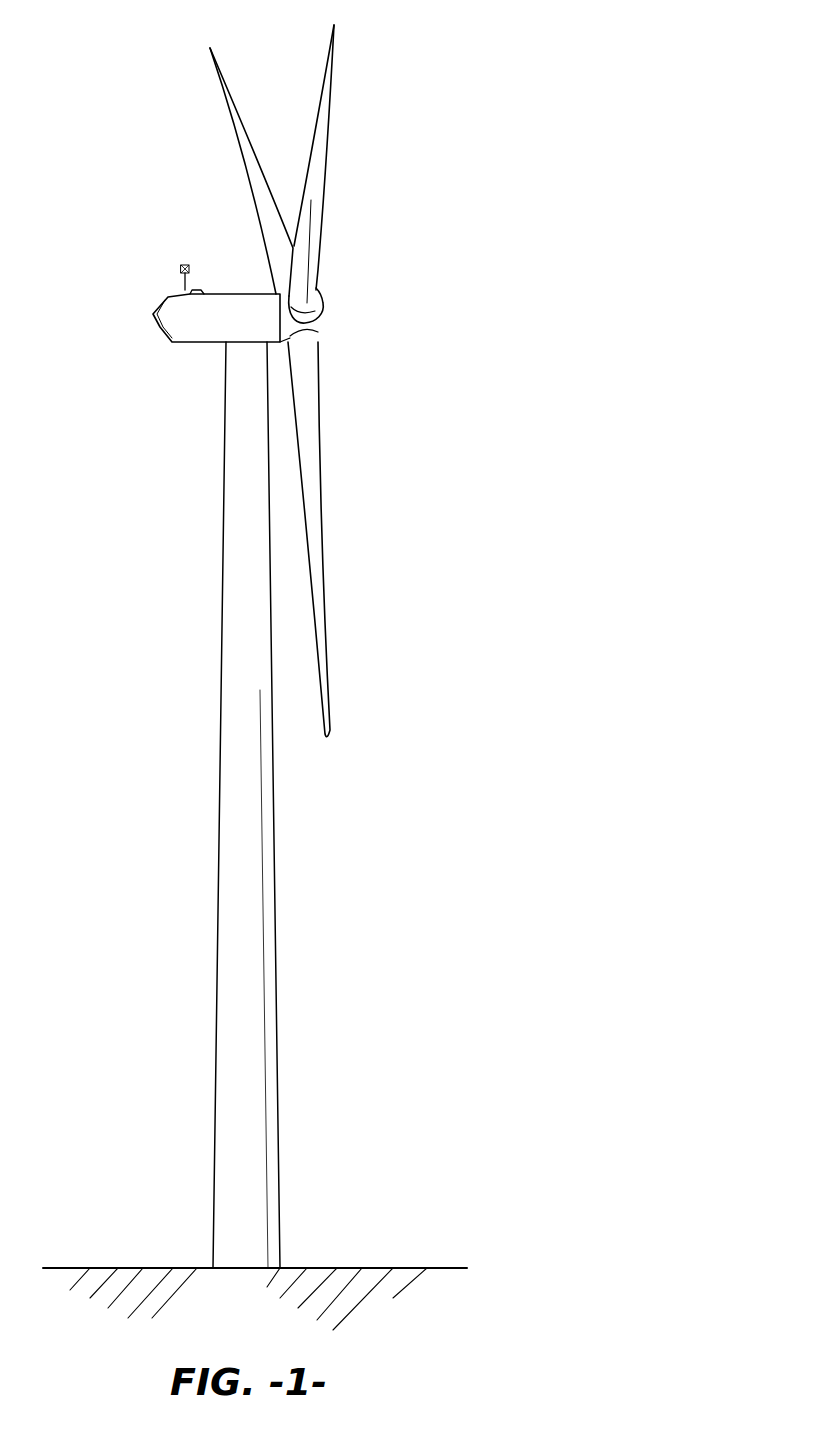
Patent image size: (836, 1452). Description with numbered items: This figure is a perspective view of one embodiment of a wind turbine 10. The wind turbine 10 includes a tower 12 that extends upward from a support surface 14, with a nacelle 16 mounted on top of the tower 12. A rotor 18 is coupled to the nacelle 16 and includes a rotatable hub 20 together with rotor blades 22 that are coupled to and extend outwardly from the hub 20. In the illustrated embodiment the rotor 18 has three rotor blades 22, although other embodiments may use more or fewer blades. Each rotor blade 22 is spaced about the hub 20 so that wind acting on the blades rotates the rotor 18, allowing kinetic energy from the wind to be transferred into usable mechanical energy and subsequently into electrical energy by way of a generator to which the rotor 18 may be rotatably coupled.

The wind turbine 10 is at (455, 138).
The tower 12 is at (232, 933).
The support surface 14 is at (355, 1268).
The nacelle 16 is at (198, 345).
The rotor 18 is at (357, 328).
The rotatable hub 20 is at (337, 315).
The rotor blade 22 is at (237, 135).